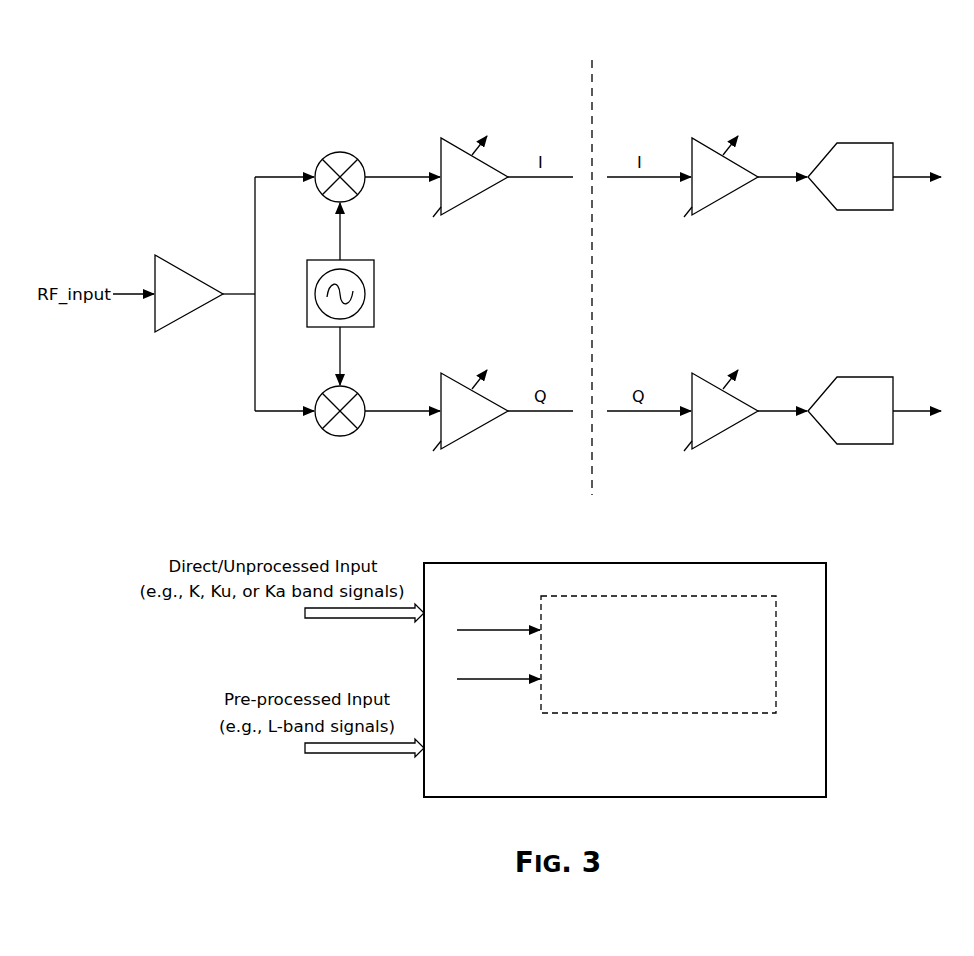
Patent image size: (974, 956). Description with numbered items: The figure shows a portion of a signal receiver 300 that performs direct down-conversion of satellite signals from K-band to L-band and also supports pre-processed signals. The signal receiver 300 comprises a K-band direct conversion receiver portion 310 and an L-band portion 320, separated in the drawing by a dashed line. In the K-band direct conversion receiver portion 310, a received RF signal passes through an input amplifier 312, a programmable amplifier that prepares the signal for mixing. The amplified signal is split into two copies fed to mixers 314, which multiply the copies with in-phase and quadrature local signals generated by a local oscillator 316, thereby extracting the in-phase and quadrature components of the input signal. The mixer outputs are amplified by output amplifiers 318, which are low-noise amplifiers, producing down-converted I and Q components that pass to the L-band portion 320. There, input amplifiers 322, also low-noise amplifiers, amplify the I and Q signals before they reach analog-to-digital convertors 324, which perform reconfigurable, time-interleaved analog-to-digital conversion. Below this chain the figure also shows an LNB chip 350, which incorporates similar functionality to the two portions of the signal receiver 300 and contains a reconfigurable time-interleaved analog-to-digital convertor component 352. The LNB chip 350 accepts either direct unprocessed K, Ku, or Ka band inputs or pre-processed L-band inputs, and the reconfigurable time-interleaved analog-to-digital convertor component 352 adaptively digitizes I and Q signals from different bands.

The signal receiver 300 is at (896, 92).
The K-band direct conversion receiver portion 310 is at (426, 84).
The L-band portion 320 is at (743, 84).
The input amplifier 312 is at (180, 320).
The mixers 314 is at (344, 153).
The local oscillator 316 is at (374, 297).
The output amplifiers 318 is at (475, 202).
The input amplifiers 322 is at (725, 202).
The analog-to-digital convertors 324 is at (850, 293).
The LNB chip 350 is at (610, 787).
The reconfigurable time-interleaved analog-to-digital convertor component 352 is at (643, 686).